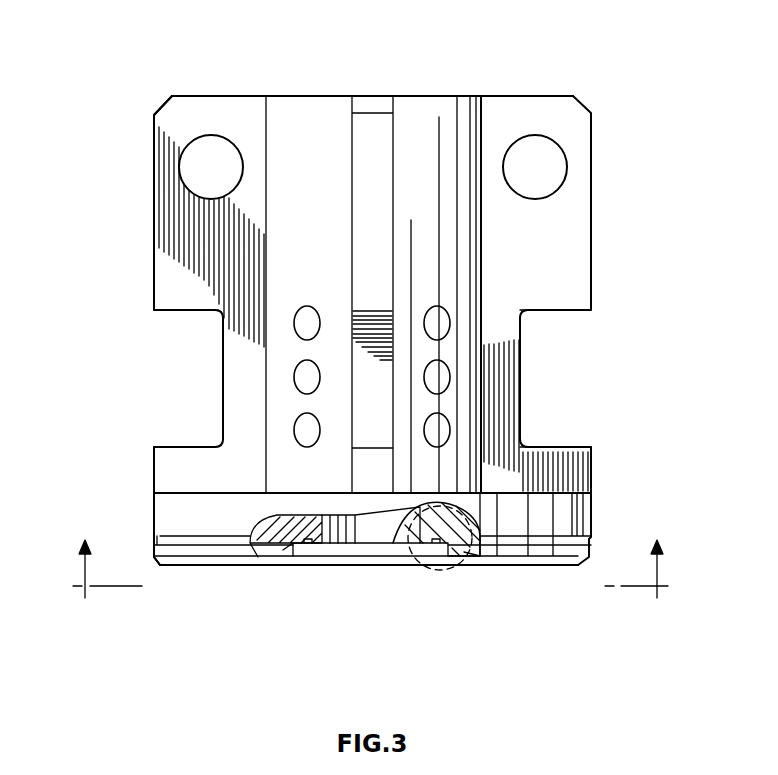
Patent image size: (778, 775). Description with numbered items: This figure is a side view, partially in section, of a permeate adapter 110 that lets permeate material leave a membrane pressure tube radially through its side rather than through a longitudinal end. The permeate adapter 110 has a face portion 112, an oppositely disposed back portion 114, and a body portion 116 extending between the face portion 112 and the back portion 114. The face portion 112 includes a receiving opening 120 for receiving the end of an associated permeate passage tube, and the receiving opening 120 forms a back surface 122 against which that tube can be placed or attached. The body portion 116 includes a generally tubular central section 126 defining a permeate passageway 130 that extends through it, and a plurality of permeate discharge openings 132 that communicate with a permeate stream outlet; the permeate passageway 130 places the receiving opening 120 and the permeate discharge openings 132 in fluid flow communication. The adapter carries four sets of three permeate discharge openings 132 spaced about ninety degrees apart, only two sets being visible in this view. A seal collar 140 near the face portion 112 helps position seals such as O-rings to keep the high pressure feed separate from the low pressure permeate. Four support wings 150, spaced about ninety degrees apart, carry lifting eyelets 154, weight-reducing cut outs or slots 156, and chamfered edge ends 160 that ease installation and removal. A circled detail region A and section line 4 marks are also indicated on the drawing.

The permeate adapter 110 is at (637, 158).
The face portion 112 is at (280, 568).
The back portion 114 is at (530, 94).
The body portion 116 is at (173, 337).
The receiving opening 120 is at (388, 570).
The back surface 122 is at (417, 510).
The tubular central section 126 is at (311, 130).
The permeate passageway 130 is at (362, 530).
The permeate discharge openings 132 is at (305, 432).
The seal collar 140 is at (150, 537).
The support wings 150 is at (153, 258).
The lifting eyelets 154 is at (180, 165).
The cut outs or slots 156 is at (178, 447).
The chamfered edge ends 160 is at (163, 100).
The detail A is at (432, 572).
The section line 4- 4 is at (370, 550).